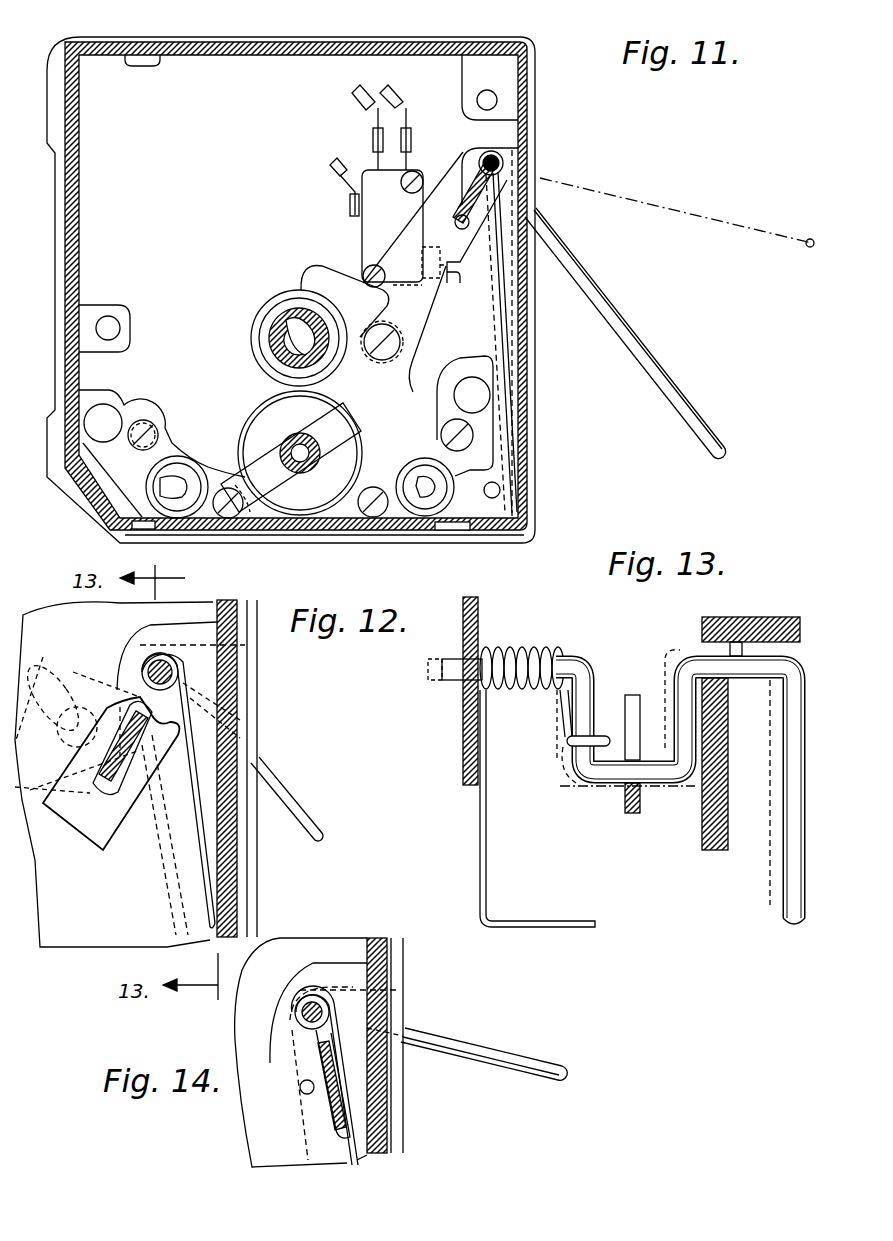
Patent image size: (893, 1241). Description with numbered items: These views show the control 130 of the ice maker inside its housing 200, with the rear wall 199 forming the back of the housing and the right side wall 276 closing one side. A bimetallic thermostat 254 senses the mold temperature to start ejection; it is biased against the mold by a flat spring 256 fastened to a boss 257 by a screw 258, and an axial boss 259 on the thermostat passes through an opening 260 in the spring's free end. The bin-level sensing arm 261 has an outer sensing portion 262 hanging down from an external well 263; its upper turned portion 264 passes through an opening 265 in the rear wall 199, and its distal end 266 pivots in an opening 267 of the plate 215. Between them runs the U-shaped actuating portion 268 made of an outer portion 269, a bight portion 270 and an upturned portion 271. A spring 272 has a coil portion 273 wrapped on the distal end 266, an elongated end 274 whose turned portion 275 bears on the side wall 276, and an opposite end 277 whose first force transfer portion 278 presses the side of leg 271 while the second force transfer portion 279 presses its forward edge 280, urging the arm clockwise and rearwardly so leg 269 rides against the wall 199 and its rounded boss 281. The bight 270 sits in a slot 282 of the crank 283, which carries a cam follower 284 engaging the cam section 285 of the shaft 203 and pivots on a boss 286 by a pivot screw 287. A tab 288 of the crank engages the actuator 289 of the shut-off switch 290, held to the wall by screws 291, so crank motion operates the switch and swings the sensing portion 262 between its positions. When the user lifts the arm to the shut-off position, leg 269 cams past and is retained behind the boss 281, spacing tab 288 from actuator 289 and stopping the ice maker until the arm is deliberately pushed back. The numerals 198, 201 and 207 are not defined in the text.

In FIG. 11, the control 130 is at (548, 148).
In FIG. 11, the bearing ring 198 is at (262, 322).
In FIG. 11, the rear wall 199 is at (270, 72).
In FIG. 13, the rear wall 199 is at (715, 804).
In FIG. 11, the housing 200 is at (537, 82).
In FIG. 13, the housing 200 is at (728, 845).
In FIG. 11, the inner bearing ring 201 is at (272, 370).
In FIG. 11, the shaft 203 is at (285, 300).
In FIG. 11, the roller 207 is at (428, 494).
In FIG. 13, the plate 215 is at (478, 612).
In FIG. 11, the thermostat 254 is at (359, 427).
In FIG. 11, the flat spring 256 is at (262, 450).
In FIG. 11, the boss 257 is at (207, 515).
In FIG. 11, the screw 258 is at (232, 506).
In FIG. 11, the boss 259 is at (318, 438).
In FIG. 11, the opening 260 is at (333, 455).
In FIG. 11, the sensing arm 261 is at (727, 440).
In FIG. 12, the sensing arm 261 is at (276, 783).
In FIG. 13, the sensing arm 261 is at (770, 905).
In FIG. 11, the outer sensing portion 262 is at (622, 318).
In FIG. 13, the outer sensing portion 262 is at (796, 925).
In FIG. 14, the outer sensing portion 262 is at (525, 1065).
In FIG. 11, the external well 263 is at (520, 160).
In FIG. 13, the external well 263 is at (780, 622).
In FIG. 14, the external well 263 is at (388, 983).
In FIG. 13, the turned portion 264 is at (748, 625).
In FIG. 13, the opening 265 is at (700, 655).
In FIG. 12, the distal end 266 is at (157, 668).
In FIG. 13, the distal end 266 is at (462, 673).
In FIG. 14, the distal end 266 is at (316, 1005).
In FIG. 13, the opening 267 is at (452, 658).
In FIG. 13, the U-shaped actuating portion 268 is at (603, 784).
In FIG. 14, the U-shaped actuating portion 268 is at (318, 1112).
In FIG. 13, the outer portion 269 is at (666, 690).
In FIG. 11, the bight portion 270 is at (470, 200).
In FIG. 12, the bight portion 270 is at (70, 872).
In FIG. 13, the bight portion 270 is at (642, 780).
In FIG. 14, the bight portion 270 is at (355, 1140).
In FIG. 13, the upturned portion 271 is at (618, 665).
In FIG. 14, the upturned portion 271 is at (298, 1082).
In FIG. 13, the spring 272 is at (523, 648).
In FIG. 13, the coil portion 273 is at (563, 705).
In FIG. 12, the elongated end 274 is at (212, 879).
In FIG. 13, the elongated end 274 is at (486, 812).
In FIG. 14, the elongated end 274 is at (350, 1040).
In FIG. 13, the turned portion 275 is at (557, 921).
In FIG. 11, the right side wall 276 is at (536, 297).
In FIG. 13, the opposite end 277 is at (575, 715).
In FIG. 13, the first force transfer portion 278 is at (595, 790).
In FIG. 14, the first force transfer portion 278 is at (345, 1092).
In FIG. 13, the second force transfer portion 279 is at (566, 742).
In FIG. 14, the second force transfer portion 279 is at (300, 1048).
In FIG. 13, the forward edge 280 is at (574, 656).
In FIG. 12, the boss 281 is at (240, 722).
In FIG. 13, the boss 281 is at (708, 717).
In FIG. 14, the boss 281 is at (313, 1088).
In FIG. 11, the slot 282 is at (460, 228).
In FIG. 12, the slot 282 is at (122, 840).
In FIG. 13, the slot 282 is at (638, 790).
In FIG. 11, the crank 283 is at (416, 318).
In FIG. 12, the crank 283 is at (136, 773).
In FIG. 13, the crank 283 is at (632, 815).
In FIG. 11, the cam follower 284 is at (305, 270).
In FIG. 11, the cam section 285 is at (292, 300).
In FIG. 11, the boss 286 is at (403, 345).
In FIG. 11, the pivot screw 287 is at (392, 352).
In FIG. 11, the tab 288 is at (455, 288).
In FIG. 11, the actuator 289 is at (412, 258).
In FIG. 11, the shut-off switch 290 is at (362, 185).
In FIG. 11, the screws 291 is at (412, 183).